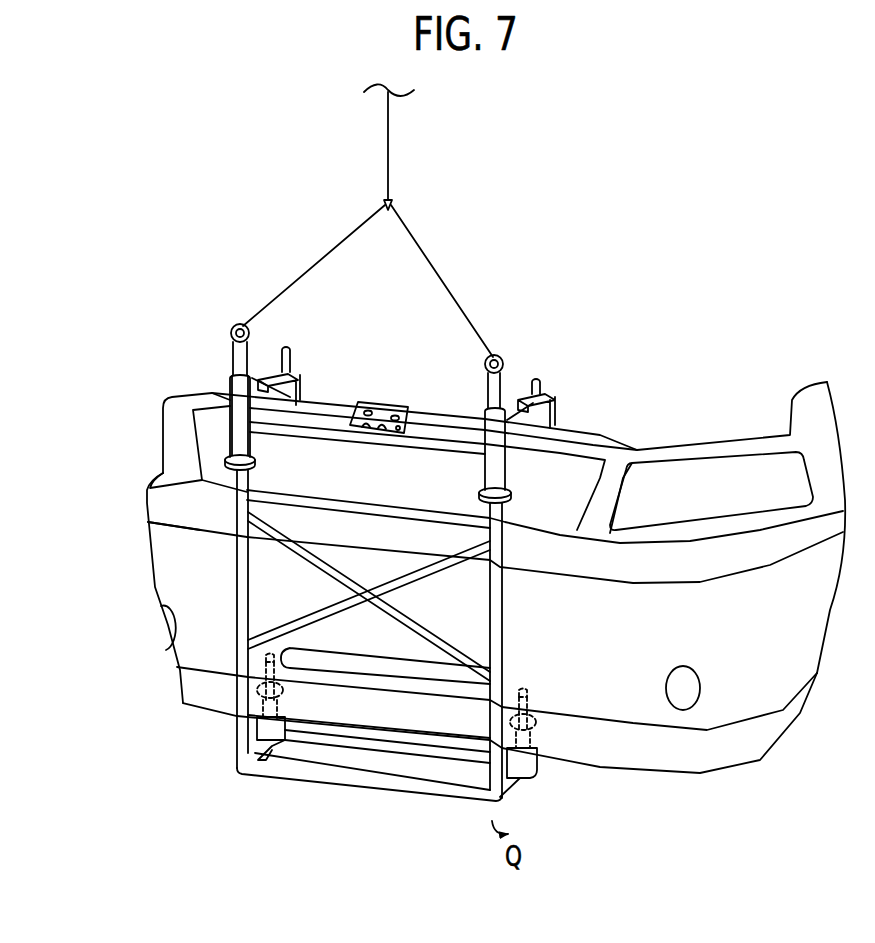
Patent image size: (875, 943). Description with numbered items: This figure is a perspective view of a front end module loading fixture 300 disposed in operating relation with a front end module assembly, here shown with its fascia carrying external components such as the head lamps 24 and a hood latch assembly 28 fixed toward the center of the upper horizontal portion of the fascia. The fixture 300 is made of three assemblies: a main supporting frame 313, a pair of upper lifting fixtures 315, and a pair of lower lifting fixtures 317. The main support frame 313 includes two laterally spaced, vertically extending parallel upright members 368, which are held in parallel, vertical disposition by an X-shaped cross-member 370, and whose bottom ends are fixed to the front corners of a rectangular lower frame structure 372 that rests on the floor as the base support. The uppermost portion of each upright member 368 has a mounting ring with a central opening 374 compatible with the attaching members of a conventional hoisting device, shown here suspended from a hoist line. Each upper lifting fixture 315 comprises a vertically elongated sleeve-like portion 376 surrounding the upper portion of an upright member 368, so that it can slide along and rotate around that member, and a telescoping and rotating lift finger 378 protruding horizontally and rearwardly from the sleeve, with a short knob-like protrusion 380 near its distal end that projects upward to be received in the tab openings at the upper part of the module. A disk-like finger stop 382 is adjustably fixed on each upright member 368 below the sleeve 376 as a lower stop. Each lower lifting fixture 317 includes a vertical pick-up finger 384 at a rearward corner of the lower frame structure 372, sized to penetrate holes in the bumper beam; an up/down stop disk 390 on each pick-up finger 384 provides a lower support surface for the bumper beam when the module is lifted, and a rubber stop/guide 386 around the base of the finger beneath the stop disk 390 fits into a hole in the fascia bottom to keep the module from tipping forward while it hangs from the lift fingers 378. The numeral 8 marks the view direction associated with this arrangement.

The bumper assembly 8 is at (494, 328).
The head lamps 24 is at (170, 452).
The hood latch assembly 28 is at (389, 403).
The front end module loading fixture 300 is at (193, 327).
The main supporting frame 313 is at (233, 549).
The upper lifting fixtures 315 is at (231, 393).
The lower lifting fixtures 317 is at (269, 757).
The parallel upright members 368 is at (502, 582).
The X-shaped cross-member 370 is at (371, 580).
The rectangular lower frame structure 372 is at (382, 797).
The central opening 374 is at (236, 324).
The sleeve-like portion 376 is at (257, 440).
The lift finger 378 is at (262, 372).
The knob-like protrusion 380 is at (291, 355).
The finger stop 382 is at (220, 466).
The pick-up finger 384 is at (538, 697).
The rubber stop/guide 386 is at (540, 768).
The up/down stop disk 390 is at (548, 720).